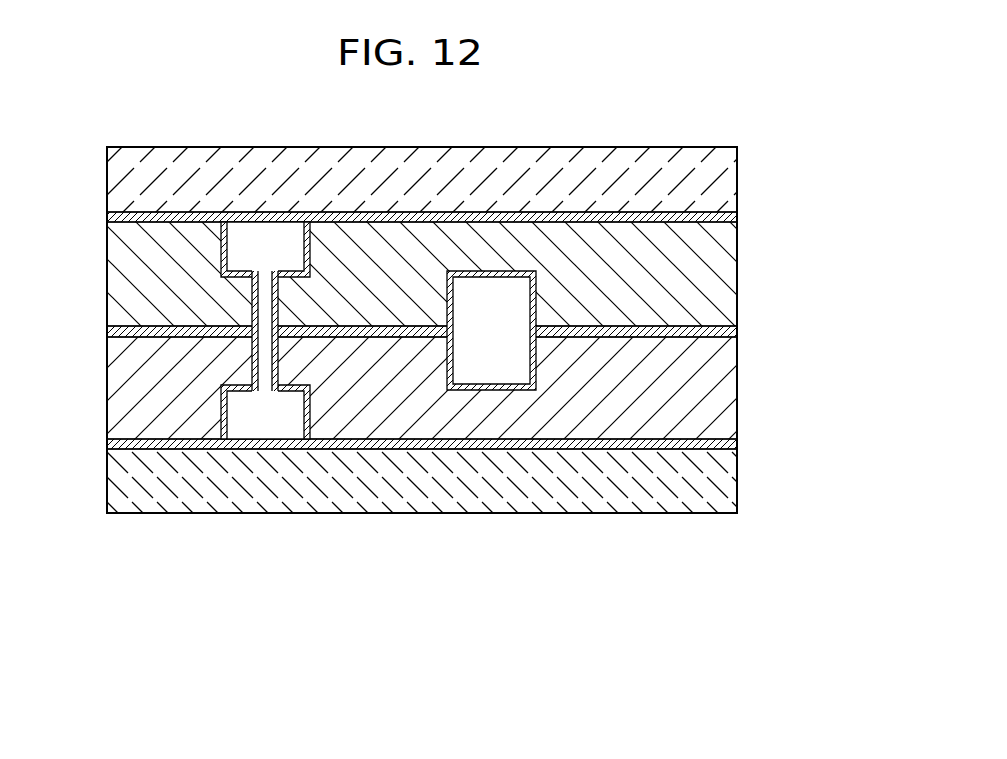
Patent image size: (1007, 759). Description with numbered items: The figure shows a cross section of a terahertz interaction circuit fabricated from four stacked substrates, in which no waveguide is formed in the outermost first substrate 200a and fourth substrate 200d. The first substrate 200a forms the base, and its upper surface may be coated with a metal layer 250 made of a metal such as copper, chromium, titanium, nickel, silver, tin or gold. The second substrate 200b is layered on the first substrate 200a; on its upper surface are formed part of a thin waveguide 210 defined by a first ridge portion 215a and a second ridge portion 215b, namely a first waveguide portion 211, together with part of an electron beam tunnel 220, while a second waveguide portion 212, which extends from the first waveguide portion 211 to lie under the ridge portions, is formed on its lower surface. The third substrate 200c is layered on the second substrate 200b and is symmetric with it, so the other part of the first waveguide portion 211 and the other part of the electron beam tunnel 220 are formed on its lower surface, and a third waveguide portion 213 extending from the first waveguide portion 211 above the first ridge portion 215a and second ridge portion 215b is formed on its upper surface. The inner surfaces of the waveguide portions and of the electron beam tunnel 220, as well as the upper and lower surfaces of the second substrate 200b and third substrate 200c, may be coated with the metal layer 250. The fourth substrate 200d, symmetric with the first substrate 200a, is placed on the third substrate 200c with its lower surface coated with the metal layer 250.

The first substrate 200a is at (738, 482).
The second substrate 200b is at (738, 383).
The third substrate 200c is at (738, 272).
The fourth substrate 200d is at (738, 180).
The metal layer 250 is at (738, 218).
The waveguide 210 is at (220, 346).
The first waveguide portion 211 is at (268, 429).
The second waveguide portion 212 is at (279, 417).
The third waveguide portion 213 is at (267, 240).
The first ridge portion 215a is at (252, 362).
The second ridge portion 215b is at (278, 365).
The electron beam tunnel 220 is at (491, 335).